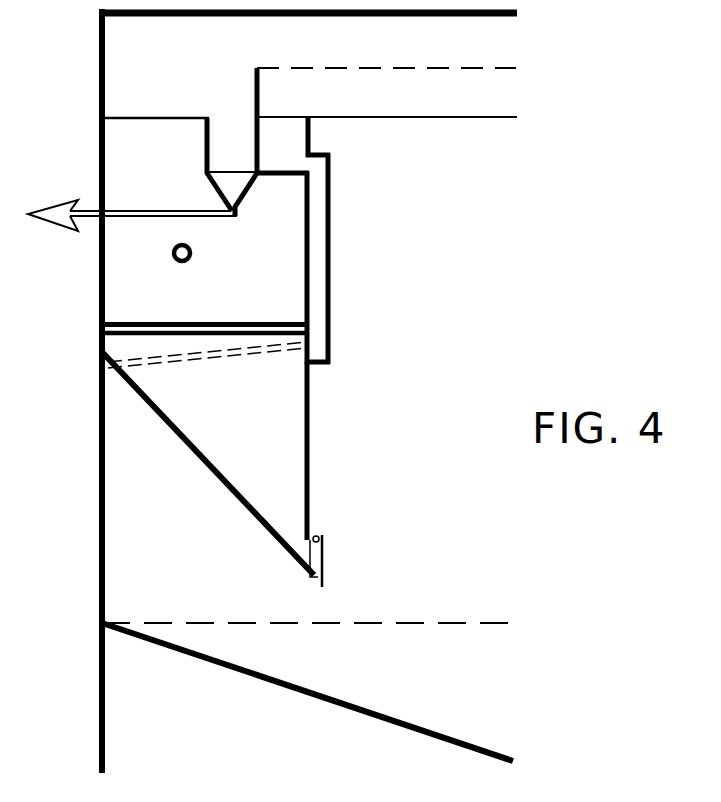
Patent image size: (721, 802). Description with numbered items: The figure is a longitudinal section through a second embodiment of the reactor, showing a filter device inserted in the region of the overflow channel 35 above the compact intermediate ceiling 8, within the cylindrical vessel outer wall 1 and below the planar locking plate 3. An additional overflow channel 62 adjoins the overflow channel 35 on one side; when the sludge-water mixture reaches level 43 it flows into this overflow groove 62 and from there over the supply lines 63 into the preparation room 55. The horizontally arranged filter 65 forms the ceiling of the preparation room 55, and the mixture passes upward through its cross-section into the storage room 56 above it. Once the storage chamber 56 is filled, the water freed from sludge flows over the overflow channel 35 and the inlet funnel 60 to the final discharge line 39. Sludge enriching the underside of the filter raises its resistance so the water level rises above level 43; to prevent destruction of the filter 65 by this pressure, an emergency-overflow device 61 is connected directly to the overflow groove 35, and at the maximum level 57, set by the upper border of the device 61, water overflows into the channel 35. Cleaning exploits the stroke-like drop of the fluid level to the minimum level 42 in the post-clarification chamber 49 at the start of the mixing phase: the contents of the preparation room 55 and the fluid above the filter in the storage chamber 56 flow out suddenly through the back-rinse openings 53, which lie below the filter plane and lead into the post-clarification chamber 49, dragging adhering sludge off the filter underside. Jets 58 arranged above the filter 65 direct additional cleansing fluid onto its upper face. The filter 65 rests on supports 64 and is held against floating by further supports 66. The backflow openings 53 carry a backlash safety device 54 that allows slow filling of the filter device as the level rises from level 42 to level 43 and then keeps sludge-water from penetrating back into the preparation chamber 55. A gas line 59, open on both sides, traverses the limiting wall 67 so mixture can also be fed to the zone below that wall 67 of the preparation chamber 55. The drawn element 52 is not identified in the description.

The cylindrical vessel outer wall 1 is at (99, 60).
The locking plate 3 is at (186, 18).
The compact intermediate ceiling 8 is at (400, 722).
The overflow channel 35 is at (228, 152).
The final discharge line 39 is at (115, 211).
The minimum level 42 is at (411, 623).
The level 43 is at (405, 117).
The post-clarification chamber 49 is at (408, 367).
The channel top wall 52 is at (128, 118).
The back-rinse openings 53 is at (311, 577).
The backlash safety device 54 is at (327, 560).
The preparation room 55 is at (234, 416).
The storage room 56 is at (219, 279).
The maximum level 57 is at (405, 68).
The jets 58 is at (191, 250).
The gas line 59 is at (143, 360).
The inlet funnel 60 is at (246, 196).
The emergency-overflow device 61 is at (259, 95).
The additional overflow channel 62 is at (290, 139).
The supply lines 63 is at (321, 258).
The supports 64 is at (225, 343).
The filter 65 is at (227, 324).
The further supports 66 is at (143, 324).
The limiting wall 67 is at (304, 481).